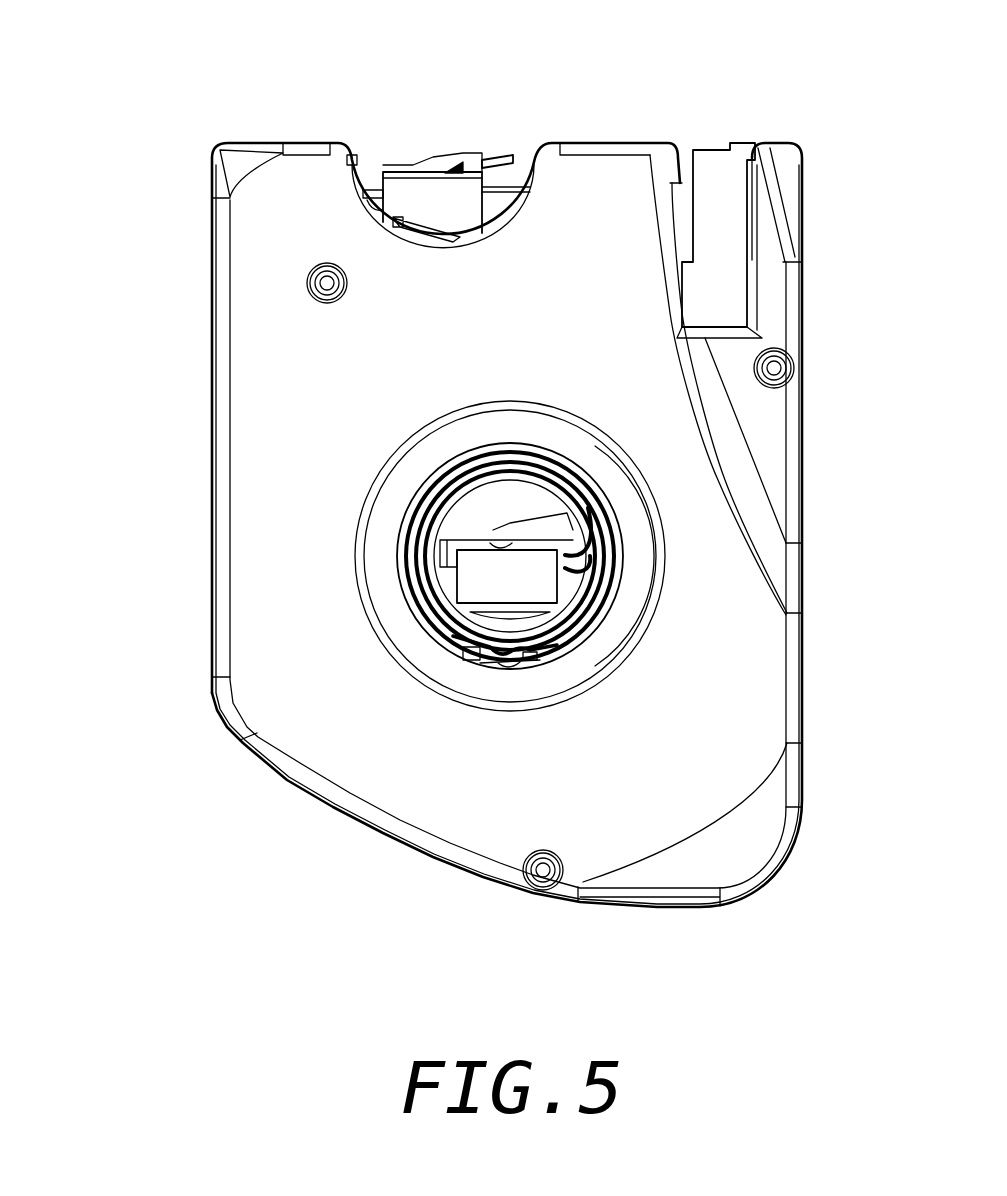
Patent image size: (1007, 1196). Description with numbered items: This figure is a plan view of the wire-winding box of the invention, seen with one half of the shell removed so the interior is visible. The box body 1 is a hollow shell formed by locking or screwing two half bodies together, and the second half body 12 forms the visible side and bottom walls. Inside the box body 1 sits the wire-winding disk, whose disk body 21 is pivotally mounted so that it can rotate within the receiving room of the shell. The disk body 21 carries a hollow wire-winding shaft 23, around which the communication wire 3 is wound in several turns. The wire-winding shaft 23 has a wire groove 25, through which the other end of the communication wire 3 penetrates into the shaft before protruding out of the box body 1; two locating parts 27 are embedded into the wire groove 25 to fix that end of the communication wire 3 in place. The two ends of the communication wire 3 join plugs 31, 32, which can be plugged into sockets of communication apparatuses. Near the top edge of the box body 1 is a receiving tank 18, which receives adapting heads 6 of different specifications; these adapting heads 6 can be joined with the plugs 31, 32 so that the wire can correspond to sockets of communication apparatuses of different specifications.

The box body 1 is at (190, 587).
The communication wire 3 is at (560, 467).
The adapting heads 6 is at (410, 192).
The second half body 12 is at (750, 688).
The receiving tank 18 is at (522, 160).
The disk body 21 is at (373, 555).
The wire-winding shaft 23 is at (447, 658).
The wire groove 25 is at (407, 608).
The locating parts 27 is at (477, 660).
The plug 31 is at (727, 167).
The plug 32 is at (540, 583).